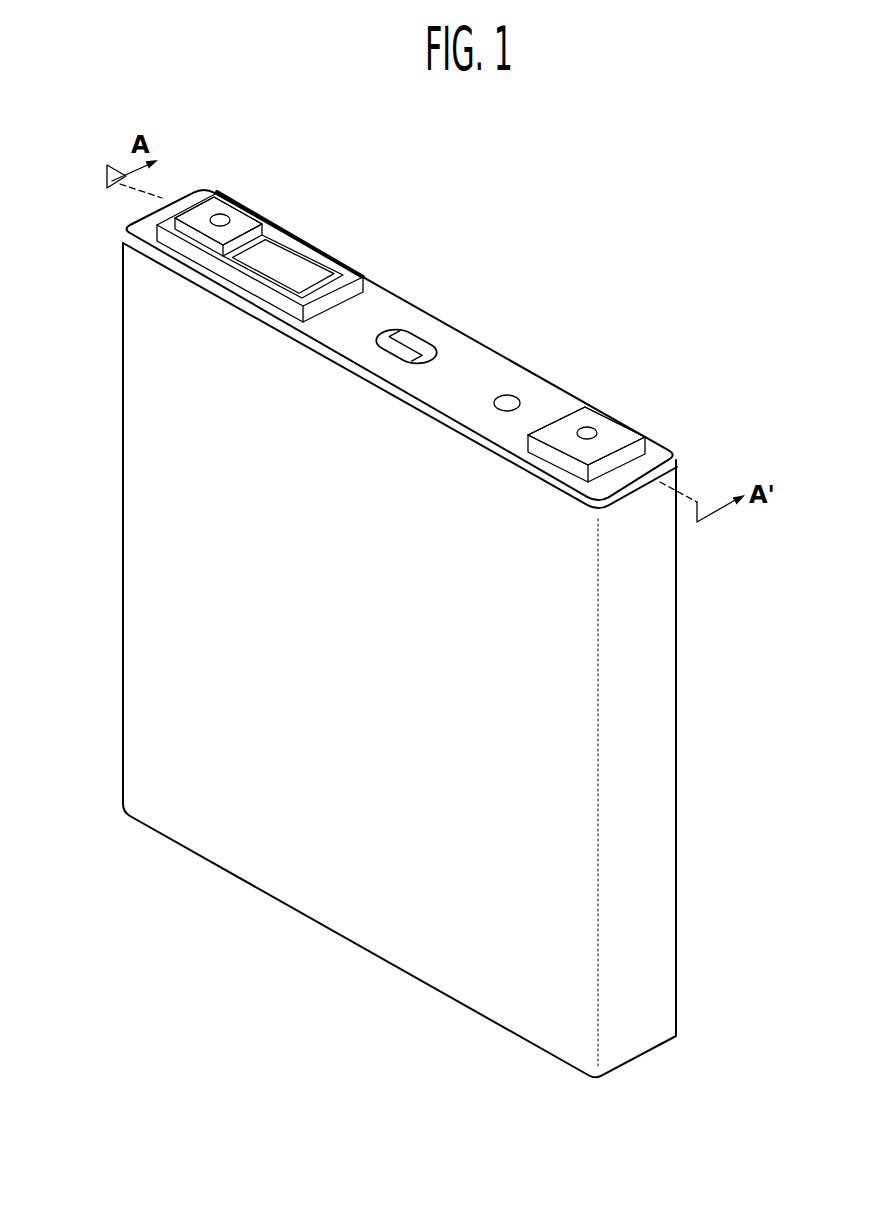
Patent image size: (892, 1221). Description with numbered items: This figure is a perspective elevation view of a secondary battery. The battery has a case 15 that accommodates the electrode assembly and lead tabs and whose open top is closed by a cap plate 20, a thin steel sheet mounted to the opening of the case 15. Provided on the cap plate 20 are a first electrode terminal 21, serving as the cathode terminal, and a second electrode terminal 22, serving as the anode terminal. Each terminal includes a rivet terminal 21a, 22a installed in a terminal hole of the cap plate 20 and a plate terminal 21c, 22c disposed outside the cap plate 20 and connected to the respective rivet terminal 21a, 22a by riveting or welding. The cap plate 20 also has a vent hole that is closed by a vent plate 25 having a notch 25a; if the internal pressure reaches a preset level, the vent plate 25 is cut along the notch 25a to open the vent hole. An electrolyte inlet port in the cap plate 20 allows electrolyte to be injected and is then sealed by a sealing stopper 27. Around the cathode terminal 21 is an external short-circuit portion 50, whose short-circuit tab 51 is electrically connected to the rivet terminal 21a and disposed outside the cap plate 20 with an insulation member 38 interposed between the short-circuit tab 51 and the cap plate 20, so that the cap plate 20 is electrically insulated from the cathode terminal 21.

The case 15 is at (307, 900).
The cap plate 20 is at (477, 380).
The first electrode terminal 21 is at (234, 195).
The rivet terminal 21a is at (247, 218).
The plate terminal 21c is at (219, 214).
The second electrode terminal 22 is at (600, 397).
The rivet terminal 22a is at (594, 430).
The plate terminal 22c is at (643, 430).
The vent plate 25 is at (403, 329).
The notch 25a is at (419, 349).
The sealing stopper 27 is at (507, 396).
The insulation member 38 is at (288, 230).
The external short-circuit portion 50 is at (316, 240).
The short-circuit tab 51 is at (308, 277).